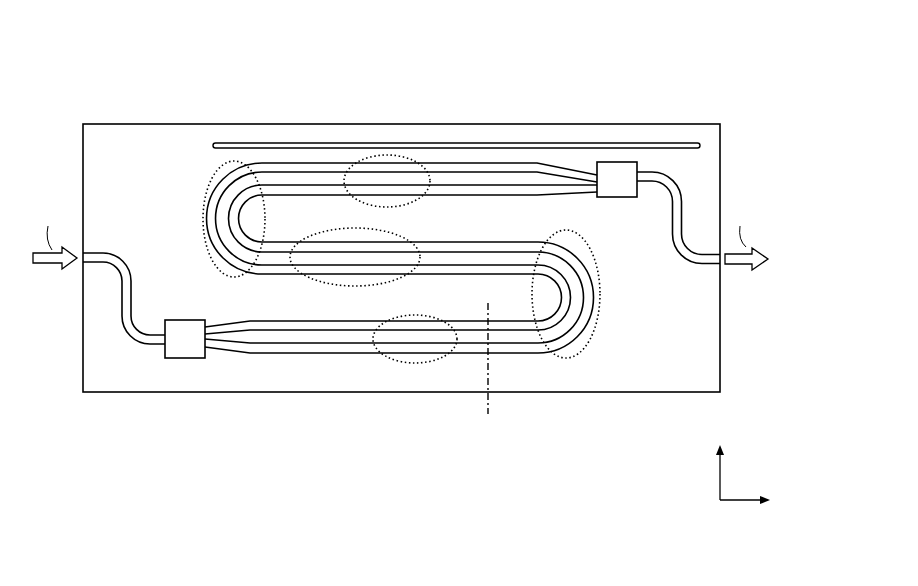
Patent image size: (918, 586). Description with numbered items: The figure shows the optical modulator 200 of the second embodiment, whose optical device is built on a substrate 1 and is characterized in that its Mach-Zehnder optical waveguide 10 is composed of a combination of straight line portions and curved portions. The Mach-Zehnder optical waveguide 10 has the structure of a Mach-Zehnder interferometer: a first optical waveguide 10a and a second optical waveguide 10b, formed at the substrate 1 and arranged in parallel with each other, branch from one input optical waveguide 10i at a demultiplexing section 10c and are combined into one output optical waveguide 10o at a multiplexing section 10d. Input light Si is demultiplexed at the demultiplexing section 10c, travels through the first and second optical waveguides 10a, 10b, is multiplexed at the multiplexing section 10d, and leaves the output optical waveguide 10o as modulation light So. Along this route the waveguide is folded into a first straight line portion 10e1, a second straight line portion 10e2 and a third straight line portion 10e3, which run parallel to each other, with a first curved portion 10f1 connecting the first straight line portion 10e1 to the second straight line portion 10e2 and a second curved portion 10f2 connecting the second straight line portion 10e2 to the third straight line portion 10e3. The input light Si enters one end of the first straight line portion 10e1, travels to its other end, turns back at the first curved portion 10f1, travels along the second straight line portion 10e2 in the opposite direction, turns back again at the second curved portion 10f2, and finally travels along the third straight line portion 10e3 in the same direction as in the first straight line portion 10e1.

The optical modulator 200 is at (310, 51).
The substrate 1 is at (113, 124).
The Mach-Zehnder optical waveguide 10 is at (400, 259).
The first optical waveguide 10a is at (438, 160).
The second optical waveguide 10b is at (481, 187).
The demultiplexing section 10c is at (183, 358).
The multiplexing section 10d is at (616, 162).
The input optical waveguide 10i is at (97, 263).
The output optical waveguide 10o is at (705, 264).
The first straight line portion 10e1 is at (424, 364).
The second straight line portion 10e2 is at (320, 237).
The third straight line portion 10e3 is at (380, 155).
The first curved portion 10f1 is at (600, 346).
The second curved portion 10f2 is at (203, 186).